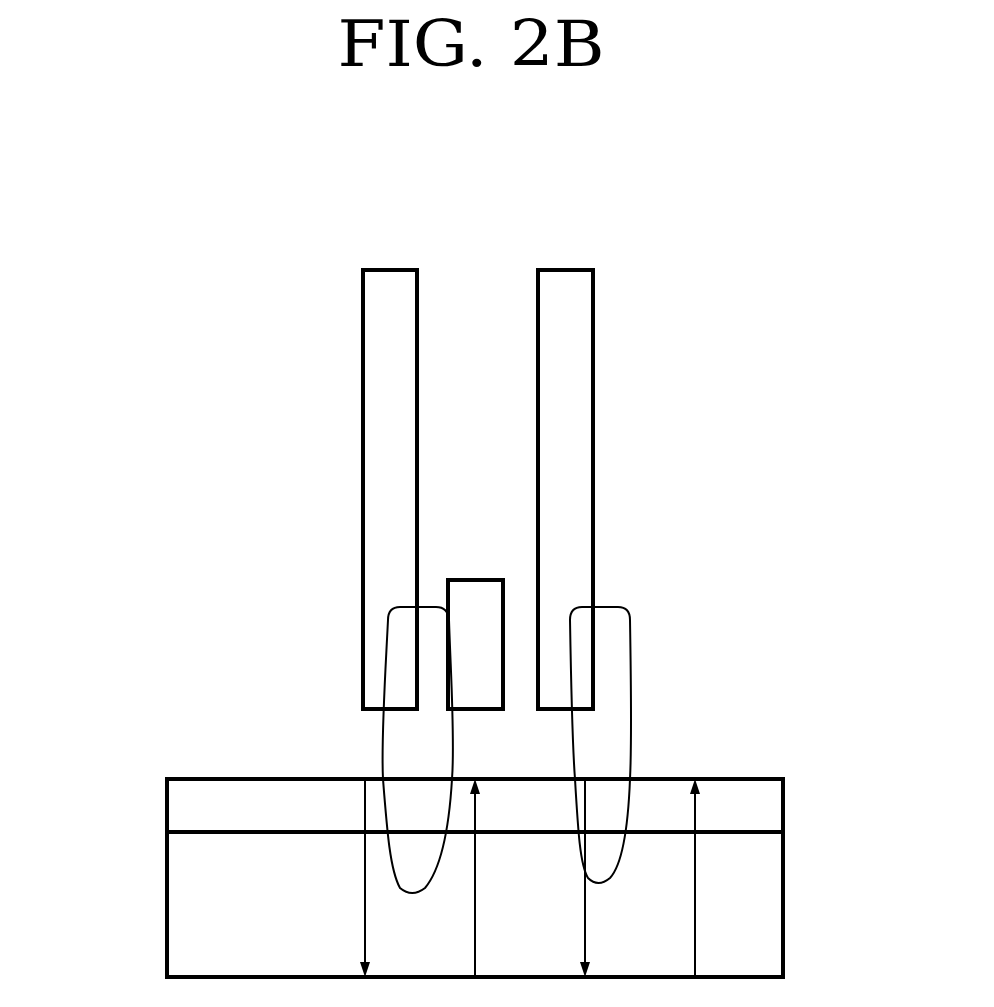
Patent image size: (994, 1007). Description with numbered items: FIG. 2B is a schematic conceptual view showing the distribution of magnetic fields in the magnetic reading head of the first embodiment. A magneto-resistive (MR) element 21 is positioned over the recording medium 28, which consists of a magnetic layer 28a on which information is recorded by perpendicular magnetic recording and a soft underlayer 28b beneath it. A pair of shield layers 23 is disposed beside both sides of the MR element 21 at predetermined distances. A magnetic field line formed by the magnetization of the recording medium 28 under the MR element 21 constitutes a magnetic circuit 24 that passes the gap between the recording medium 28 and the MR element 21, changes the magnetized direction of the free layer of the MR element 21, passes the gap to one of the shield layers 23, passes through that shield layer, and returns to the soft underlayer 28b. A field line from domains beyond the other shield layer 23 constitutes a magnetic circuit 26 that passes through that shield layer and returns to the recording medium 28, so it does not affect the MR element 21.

The magneto-resistive (MR) element 21 is at (477, 590).
The shield layers 23 is at (388, 290).
The magnetic circuit 24 is at (381, 743).
The magnetic circuit 26 is at (637, 735).
The recording medium 28 is at (464, 878).
The magnetic layer 28a is at (768, 810).
The soft underlayer 28b is at (768, 907).